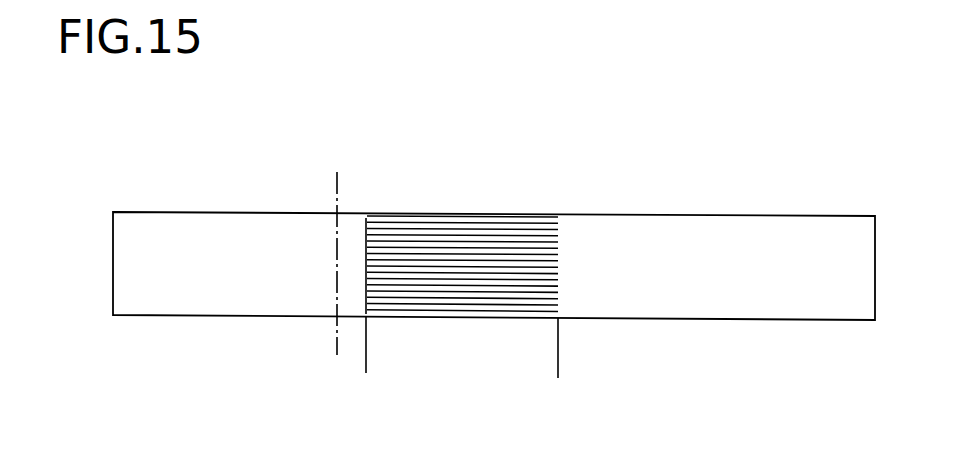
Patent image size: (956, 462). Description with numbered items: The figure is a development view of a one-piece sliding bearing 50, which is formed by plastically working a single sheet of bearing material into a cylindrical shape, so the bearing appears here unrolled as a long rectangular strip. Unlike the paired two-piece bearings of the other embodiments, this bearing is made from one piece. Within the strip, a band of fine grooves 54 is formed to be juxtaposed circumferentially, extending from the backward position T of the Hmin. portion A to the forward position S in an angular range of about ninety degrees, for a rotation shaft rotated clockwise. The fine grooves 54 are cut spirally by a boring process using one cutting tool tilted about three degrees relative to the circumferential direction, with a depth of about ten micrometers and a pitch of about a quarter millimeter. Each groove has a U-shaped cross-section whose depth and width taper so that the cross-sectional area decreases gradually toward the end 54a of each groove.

The sliding bearing 50 is at (698, 215).
The fine grooves 54 is at (470, 297).
The end of fine groove 54a is at (365, 242).
The Hmin. portion A is at (333, 183).
The forward position S is at (364, 367).
The backward position T is at (560, 367).